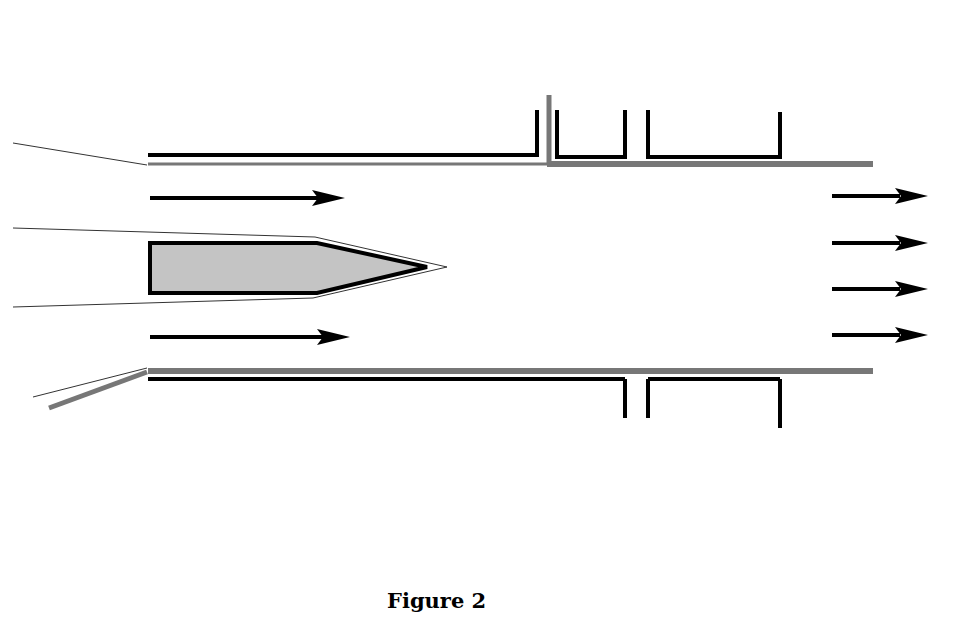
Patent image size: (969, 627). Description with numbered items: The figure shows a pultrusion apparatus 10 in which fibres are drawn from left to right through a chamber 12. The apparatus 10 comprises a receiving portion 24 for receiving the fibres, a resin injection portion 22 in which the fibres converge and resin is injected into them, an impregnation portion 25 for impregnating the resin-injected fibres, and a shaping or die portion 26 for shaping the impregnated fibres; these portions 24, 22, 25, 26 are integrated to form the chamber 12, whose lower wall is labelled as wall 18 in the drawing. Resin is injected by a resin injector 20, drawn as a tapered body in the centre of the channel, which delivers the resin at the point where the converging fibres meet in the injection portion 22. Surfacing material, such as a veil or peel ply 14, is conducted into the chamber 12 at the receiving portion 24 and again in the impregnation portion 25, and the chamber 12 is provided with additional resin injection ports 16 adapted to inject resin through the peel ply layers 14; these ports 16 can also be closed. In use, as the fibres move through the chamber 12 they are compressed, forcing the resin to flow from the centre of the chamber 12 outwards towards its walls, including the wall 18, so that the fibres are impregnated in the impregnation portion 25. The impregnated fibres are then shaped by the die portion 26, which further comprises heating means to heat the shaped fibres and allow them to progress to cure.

The pultrusion apparatus 10 is at (140, 134).
The chamber 12 is at (335, 151).
The peel ply 14 is at (550, 110).
The additional resin injection ports 16 is at (640, 121).
The bottom channel wall 18 is at (320, 374).
The resin injector 20 is at (232, 268).
The resin injection portion 22 is at (441, 271).
The receiving portion 24 is at (232, 268).
The impregnation portion 25 is at (745, 340).
The shaping portion 26 is at (880, 265).